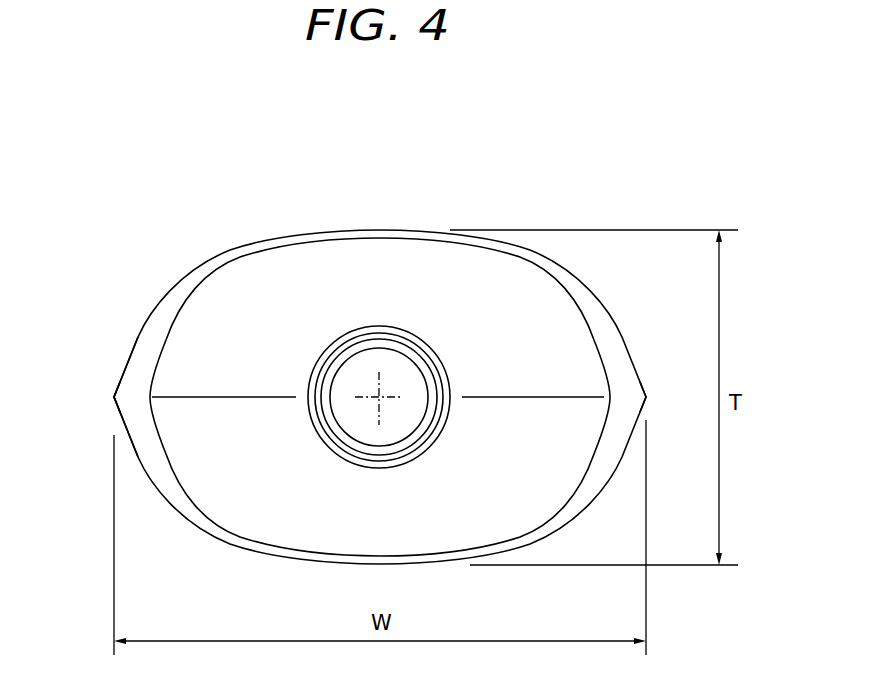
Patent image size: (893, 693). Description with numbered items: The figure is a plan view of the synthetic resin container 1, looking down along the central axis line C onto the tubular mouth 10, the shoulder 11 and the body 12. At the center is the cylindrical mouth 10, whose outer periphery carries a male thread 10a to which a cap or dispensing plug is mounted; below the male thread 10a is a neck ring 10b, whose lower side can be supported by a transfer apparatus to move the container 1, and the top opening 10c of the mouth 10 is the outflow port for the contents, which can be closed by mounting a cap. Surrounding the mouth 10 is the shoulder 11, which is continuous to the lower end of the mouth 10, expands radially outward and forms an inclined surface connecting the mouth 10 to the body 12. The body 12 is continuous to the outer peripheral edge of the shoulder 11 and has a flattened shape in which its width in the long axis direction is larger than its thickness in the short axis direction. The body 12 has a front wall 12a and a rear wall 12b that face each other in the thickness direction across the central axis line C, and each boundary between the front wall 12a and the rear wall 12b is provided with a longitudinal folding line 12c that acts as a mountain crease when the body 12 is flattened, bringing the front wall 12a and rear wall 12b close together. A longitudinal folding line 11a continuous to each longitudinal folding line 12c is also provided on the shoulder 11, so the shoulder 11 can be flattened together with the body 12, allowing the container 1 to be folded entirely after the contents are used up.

The synthetic resin container 1 is at (586, 213).
The tubular mouth 10 is at (328, 350).
The male thread 10a is at (443, 387).
The neck ring 10b is at (418, 460).
The top opening 10c is at (360, 425).
The shoulder 11 is at (554, 320).
The longitudinal folding line 11a is at (243, 400).
The body 12 is at (163, 298).
The front wall 12a is at (168, 484).
The rear wall 12b is at (143, 357).
The longitudinal folding line 12c is at (134, 397).
The central axis line C is at (381, 394).